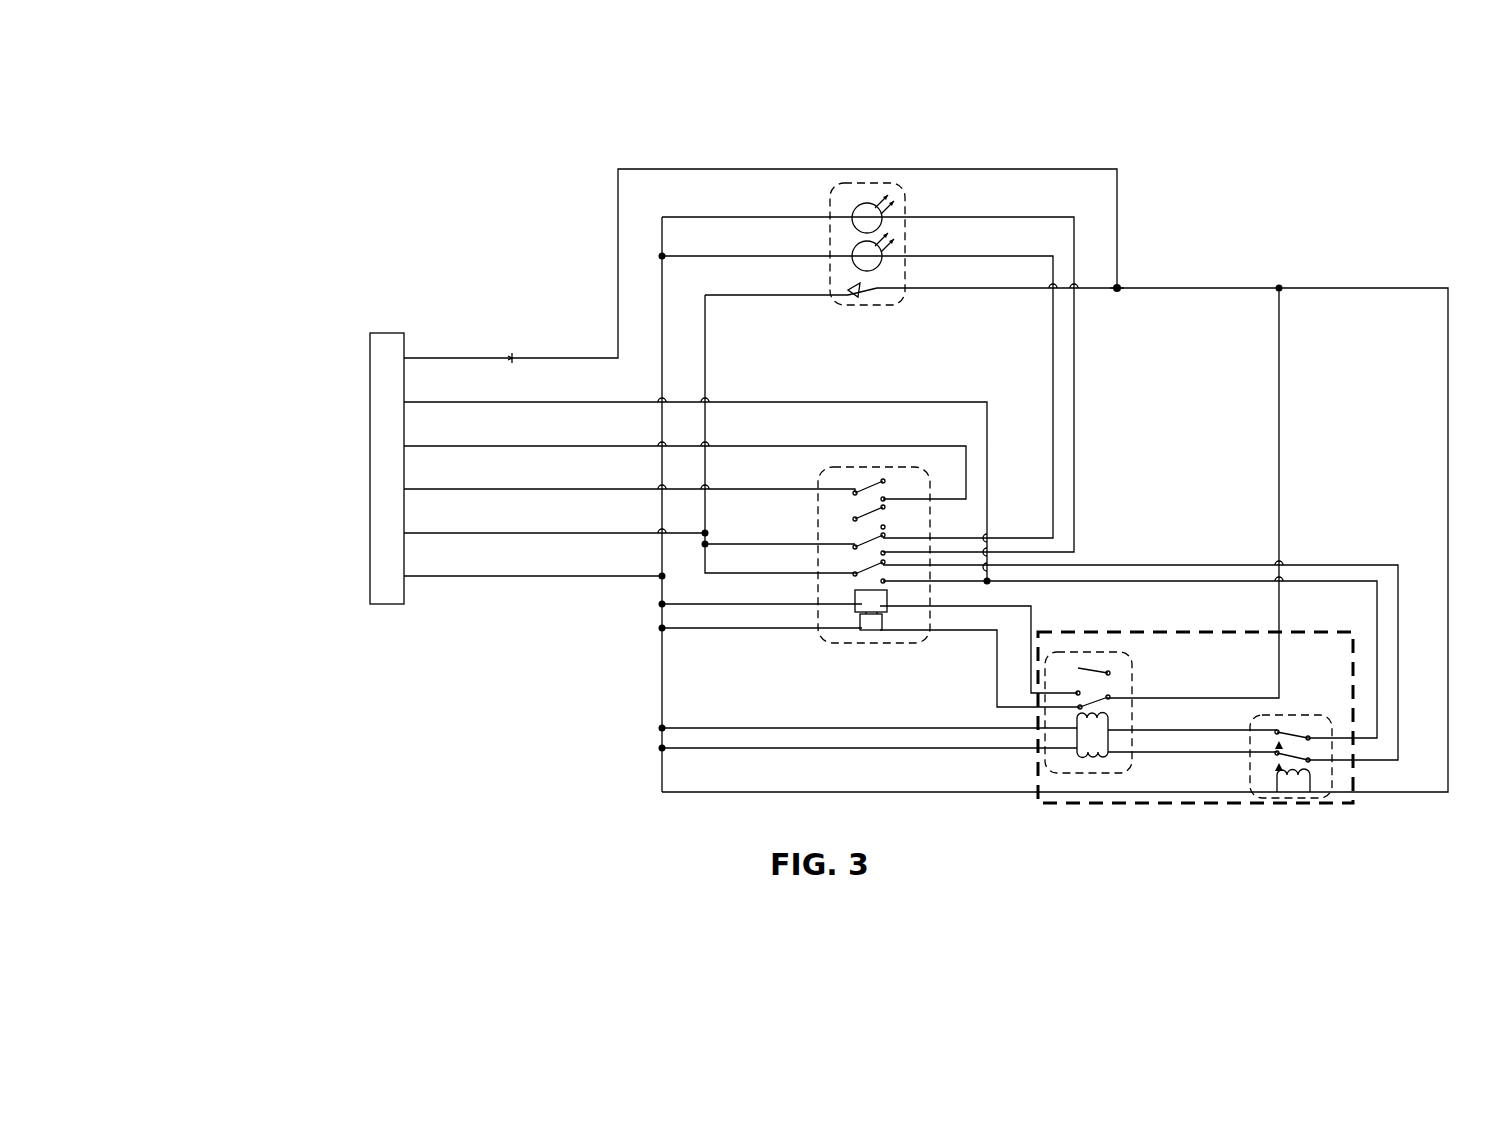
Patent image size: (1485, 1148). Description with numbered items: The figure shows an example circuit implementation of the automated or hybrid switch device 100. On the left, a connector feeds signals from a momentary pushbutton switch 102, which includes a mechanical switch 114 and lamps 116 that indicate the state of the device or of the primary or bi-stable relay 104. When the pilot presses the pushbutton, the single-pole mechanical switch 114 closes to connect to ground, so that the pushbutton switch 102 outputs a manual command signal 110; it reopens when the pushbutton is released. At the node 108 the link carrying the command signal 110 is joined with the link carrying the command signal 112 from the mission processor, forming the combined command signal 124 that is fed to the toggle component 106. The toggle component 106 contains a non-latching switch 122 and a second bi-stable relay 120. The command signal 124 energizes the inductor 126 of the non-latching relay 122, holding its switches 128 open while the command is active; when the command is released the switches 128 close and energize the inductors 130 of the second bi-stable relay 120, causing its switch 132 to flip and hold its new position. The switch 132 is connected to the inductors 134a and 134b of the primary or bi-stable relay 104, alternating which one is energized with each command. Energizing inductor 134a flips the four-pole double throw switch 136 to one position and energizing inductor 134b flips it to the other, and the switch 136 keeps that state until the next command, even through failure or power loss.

The automated or hybrid switch device 100 is at (380, 178).
The momentary pushbutton switch 102 is at (905, 192).
The primary or bi-stable relay 104 is at (817, 615).
The toggle component 106 is at (1295, 632).
The node 108 is at (1119, 284).
The manual command signal 110 is at (928, 290).
The command signal 112 is at (1023, 169).
The mechanical switch 114 is at (863, 286).
The lamps 116 is at (864, 198).
The second bi-stable relay 120 is at (1105, 653).
The non-latching switch 122 is at (1283, 715).
The command signal 124 is at (1197, 288).
The inductor 126 is at (1293, 790).
The switches 128 is at (1293, 733).
The inductors 130 is at (1093, 752).
The switch 132 is at (1093, 698).
The inductor 134a is at (864, 642).
The inductor 134b is at (877, 642).
The four-pole double throw switch 136 is at (870, 480).